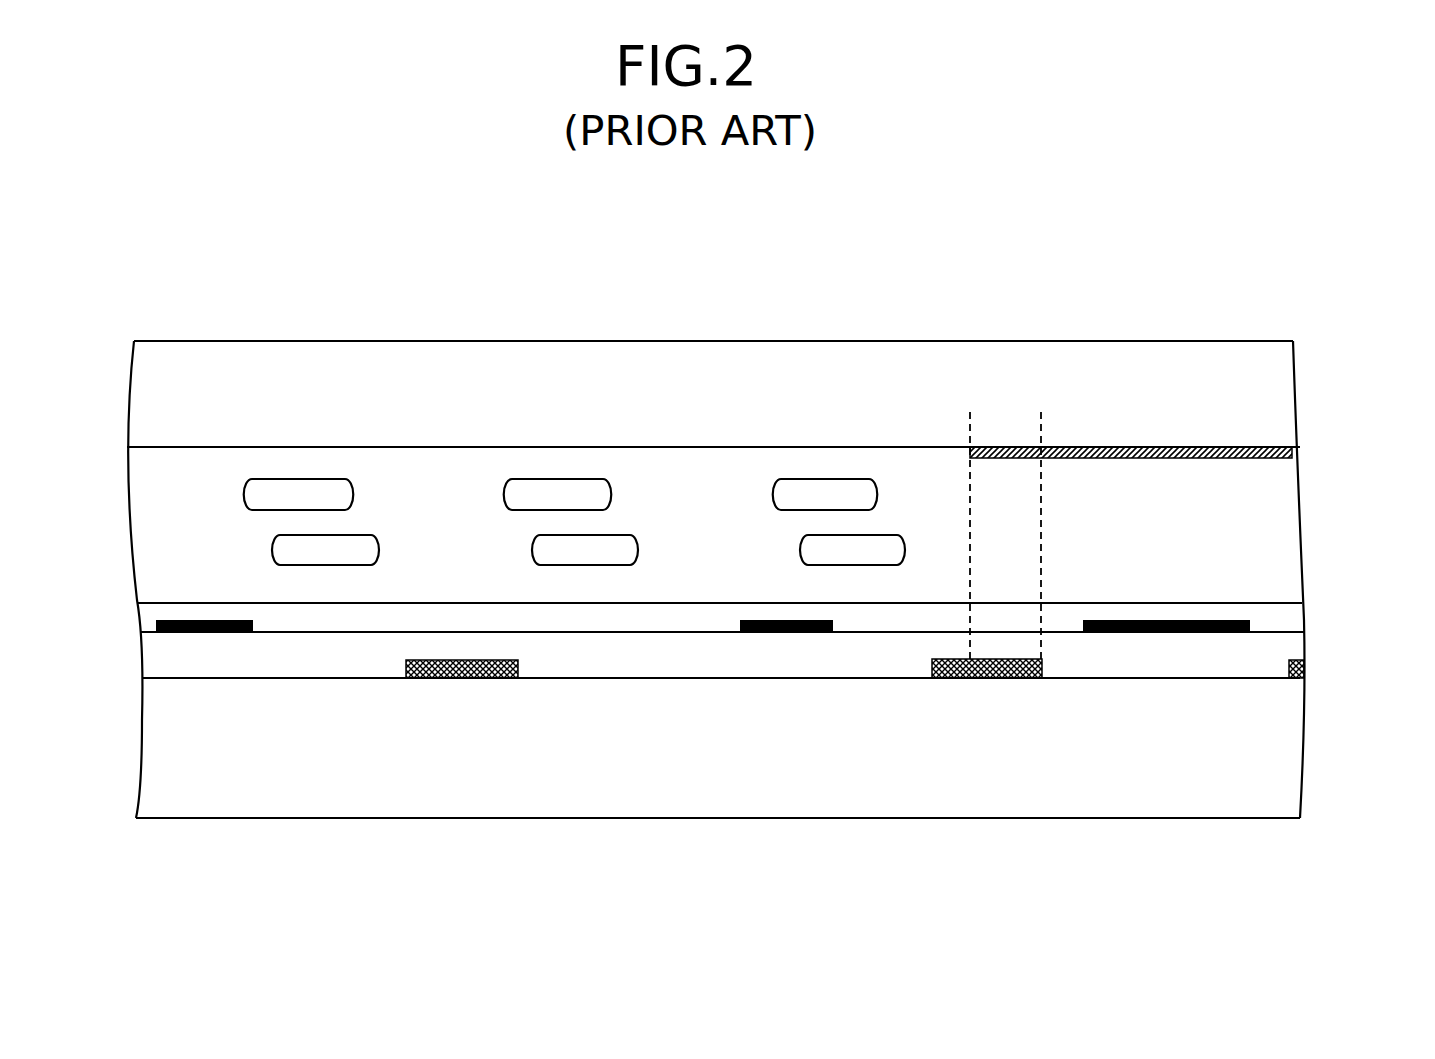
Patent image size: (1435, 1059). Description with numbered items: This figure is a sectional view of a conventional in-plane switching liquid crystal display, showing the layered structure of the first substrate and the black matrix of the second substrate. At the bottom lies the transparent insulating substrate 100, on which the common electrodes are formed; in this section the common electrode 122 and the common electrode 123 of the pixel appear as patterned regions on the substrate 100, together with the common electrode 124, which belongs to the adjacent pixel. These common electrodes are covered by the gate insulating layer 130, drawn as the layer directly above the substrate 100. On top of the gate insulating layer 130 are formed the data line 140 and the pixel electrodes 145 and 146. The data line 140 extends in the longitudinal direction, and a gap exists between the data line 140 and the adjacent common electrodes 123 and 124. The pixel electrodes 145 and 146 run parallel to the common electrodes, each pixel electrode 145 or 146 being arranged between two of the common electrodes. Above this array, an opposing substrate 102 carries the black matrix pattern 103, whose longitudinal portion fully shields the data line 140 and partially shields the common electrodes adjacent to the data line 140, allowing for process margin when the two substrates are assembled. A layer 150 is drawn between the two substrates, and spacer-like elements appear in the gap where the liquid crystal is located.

The transparent insulating substrate 100 is at (1283, 763).
The front substrate 102 is at (767, 360).
The black matrix pattern 103 is at (1108, 447).
The common electrode 122 is at (458, 678).
The common electrode 123 is at (950, 678).
The common electrode 124 is at (1305, 668).
The gate insulating layer 130 is at (1207, 653).
The data line 140 is at (1128, 632).
The pixel electrode 145 is at (207, 632).
The pixel electrode 146 is at (767, 632).
The spacer / emitter layer 150 is at (1292, 617).